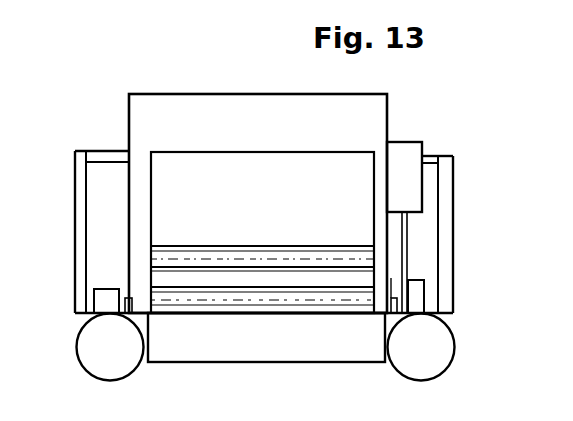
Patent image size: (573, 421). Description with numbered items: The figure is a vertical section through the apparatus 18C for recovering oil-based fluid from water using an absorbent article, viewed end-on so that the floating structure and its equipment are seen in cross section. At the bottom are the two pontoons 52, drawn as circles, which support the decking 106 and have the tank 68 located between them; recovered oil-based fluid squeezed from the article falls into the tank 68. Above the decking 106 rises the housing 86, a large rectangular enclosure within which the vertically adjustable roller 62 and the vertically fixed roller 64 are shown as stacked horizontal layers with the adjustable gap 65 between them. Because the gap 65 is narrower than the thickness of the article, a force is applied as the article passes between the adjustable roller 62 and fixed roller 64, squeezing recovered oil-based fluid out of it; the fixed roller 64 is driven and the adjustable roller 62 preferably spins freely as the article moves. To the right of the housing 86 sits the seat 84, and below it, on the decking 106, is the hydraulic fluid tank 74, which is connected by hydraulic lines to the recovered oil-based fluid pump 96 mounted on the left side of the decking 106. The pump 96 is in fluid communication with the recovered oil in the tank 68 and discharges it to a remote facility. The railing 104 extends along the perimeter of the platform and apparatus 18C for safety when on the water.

The apparatus 18C is at (105, 129).
The housing 86 is at (260, 95).
The seat 84 is at (407, 148).
The railing 104 is at (453, 193).
The adjustable gap 65 is at (257, 276).
The vertically adjustable roller 62 is at (322, 268).
The vertically fixed roller 64 is at (352, 304).
The hydraulic fluid tank 74 is at (426, 290).
The decking 106 is at (432, 313).
The recovered oil-based fluid pump 96 is at (105, 289).
The tank 68 is at (225, 352).
The pontoons 52 is at (100, 357).